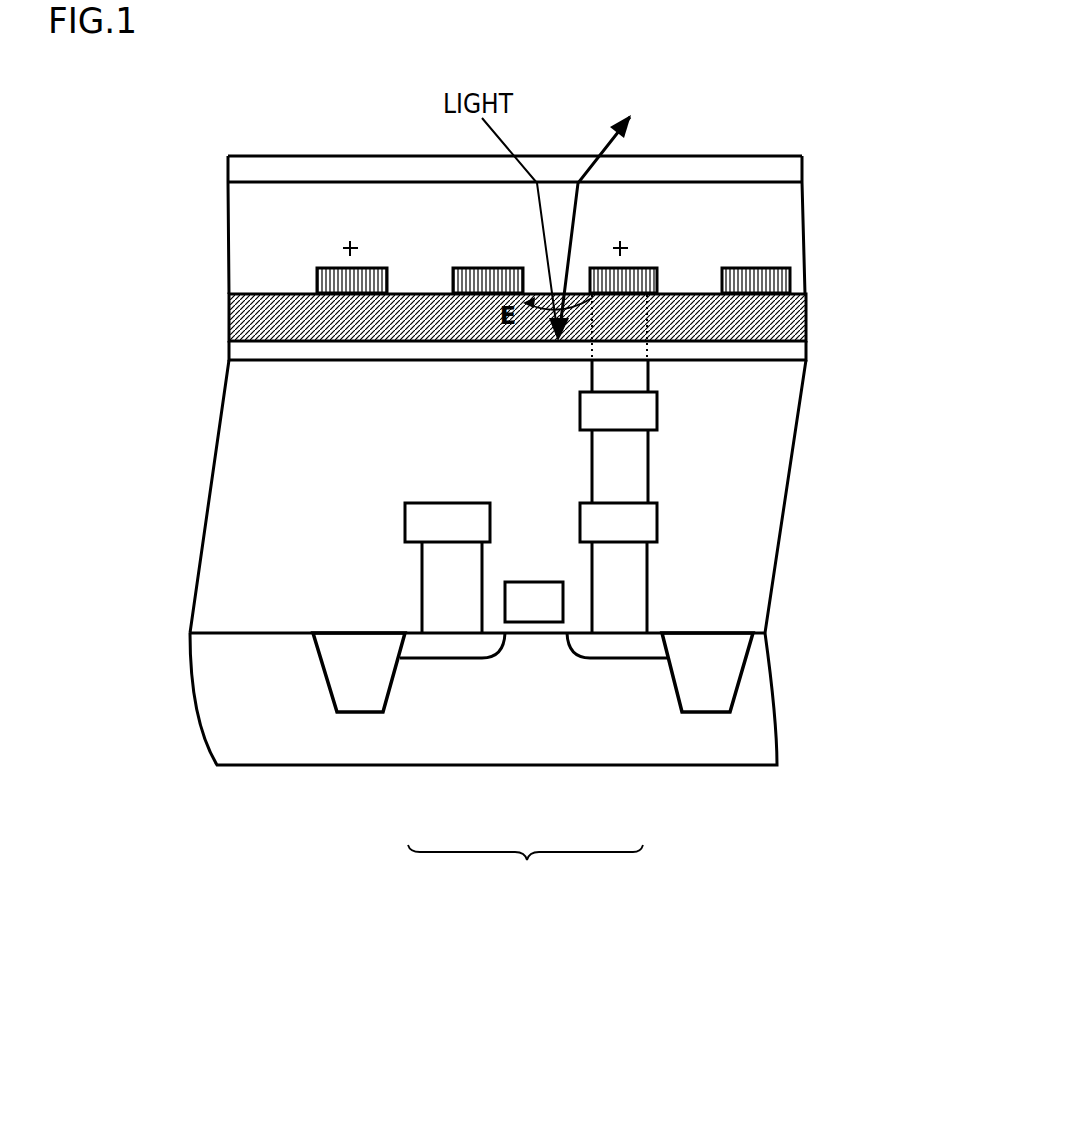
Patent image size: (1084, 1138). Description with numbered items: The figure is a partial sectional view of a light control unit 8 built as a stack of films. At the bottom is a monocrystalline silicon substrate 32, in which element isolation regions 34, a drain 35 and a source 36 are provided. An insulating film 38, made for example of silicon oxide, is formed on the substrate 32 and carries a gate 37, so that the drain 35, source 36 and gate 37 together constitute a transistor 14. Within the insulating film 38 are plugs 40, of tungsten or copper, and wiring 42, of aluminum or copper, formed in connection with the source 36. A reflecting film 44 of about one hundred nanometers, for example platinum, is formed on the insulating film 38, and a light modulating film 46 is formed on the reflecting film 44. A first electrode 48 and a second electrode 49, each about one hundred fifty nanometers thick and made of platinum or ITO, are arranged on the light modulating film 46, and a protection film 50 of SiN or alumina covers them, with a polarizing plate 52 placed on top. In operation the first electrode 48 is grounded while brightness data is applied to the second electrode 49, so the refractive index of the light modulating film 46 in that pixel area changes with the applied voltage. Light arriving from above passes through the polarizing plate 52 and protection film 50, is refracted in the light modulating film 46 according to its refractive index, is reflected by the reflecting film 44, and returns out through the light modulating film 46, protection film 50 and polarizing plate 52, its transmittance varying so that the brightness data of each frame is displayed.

The light control unit 8 is at (918, 929).
The transistor 14 is at (525, 876).
The substrate 32 is at (750, 697).
The element isolation regions 34 is at (355, 712).
The drain 35 is at (437, 658).
The source 36 is at (617, 658).
The gate 37 is at (533, 622).
The insulating film 38 is at (777, 493).
The plugs 40 is at (640, 602).
The wiring 42 is at (653, 413).
The reflecting film 44 is at (788, 345).
The light modulating film 46 is at (788, 318).
The first electrode 48 is at (720, 273).
The second electrode 49 is at (637, 265).
The protection film 50 is at (773, 210).
The polarizing plate 52 is at (757, 156).